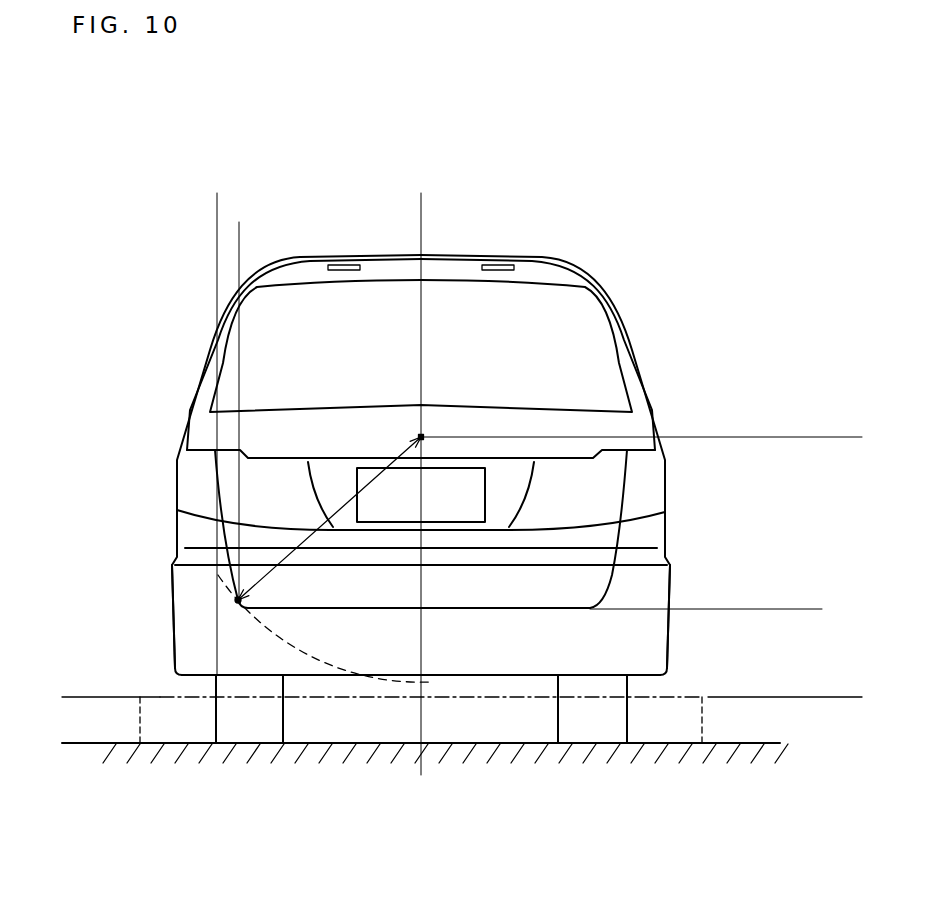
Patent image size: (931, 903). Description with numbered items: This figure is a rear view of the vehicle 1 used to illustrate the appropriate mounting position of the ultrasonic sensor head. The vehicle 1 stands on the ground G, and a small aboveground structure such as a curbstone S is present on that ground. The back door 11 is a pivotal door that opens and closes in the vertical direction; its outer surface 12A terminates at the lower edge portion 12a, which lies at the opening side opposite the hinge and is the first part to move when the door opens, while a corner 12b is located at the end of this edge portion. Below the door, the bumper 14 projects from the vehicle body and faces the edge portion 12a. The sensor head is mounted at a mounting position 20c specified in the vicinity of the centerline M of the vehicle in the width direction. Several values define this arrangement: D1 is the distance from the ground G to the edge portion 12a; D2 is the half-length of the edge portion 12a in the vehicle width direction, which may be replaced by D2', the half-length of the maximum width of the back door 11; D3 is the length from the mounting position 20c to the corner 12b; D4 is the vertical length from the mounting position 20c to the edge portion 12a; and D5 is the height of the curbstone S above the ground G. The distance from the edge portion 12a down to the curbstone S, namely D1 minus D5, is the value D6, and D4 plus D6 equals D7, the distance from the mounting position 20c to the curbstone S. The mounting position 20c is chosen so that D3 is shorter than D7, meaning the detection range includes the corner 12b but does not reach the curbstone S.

The vehicle 1 is at (652, 295).
The back door 11 is at (635, 425).
The surface of the back door 12A is at (227, 488).
The edge portion of the back door 12a is at (510, 610).
The corner of the edge portion 12b is at (238, 600).
The bumper 14 is at (173, 577).
The mounting position of the sensor head 20c is at (418, 436).
The centerline M is at (421, 361).
The curbstone S is at (157, 695).
The ground G is at (113, 742).
The distance from the ground to the edge portion D1 is at (767, 610).
The half-length of the edge portion D2 is at (330, 408).
The half-length of the maximum width of the back door D2' is at (319, 428).
The length from the mounting position to the corner D3 is at (303, 540).
The vertical length from the mounting position to the edge portion D4 is at (767, 438).
The height of the curbstone D5 is at (80, 697).
The distance from the edge portion to the curbstone D6 is at (811, 610).
The distance from the mounting position to the curbstone D7 is at (848, 438).